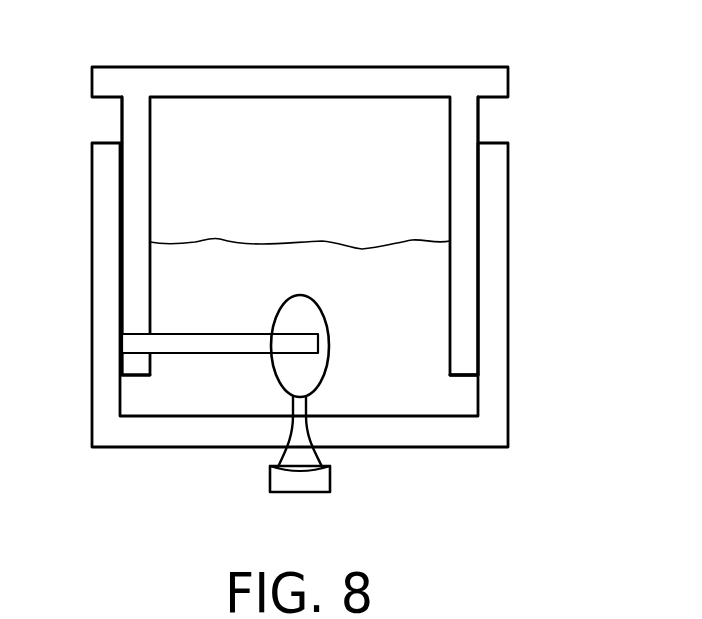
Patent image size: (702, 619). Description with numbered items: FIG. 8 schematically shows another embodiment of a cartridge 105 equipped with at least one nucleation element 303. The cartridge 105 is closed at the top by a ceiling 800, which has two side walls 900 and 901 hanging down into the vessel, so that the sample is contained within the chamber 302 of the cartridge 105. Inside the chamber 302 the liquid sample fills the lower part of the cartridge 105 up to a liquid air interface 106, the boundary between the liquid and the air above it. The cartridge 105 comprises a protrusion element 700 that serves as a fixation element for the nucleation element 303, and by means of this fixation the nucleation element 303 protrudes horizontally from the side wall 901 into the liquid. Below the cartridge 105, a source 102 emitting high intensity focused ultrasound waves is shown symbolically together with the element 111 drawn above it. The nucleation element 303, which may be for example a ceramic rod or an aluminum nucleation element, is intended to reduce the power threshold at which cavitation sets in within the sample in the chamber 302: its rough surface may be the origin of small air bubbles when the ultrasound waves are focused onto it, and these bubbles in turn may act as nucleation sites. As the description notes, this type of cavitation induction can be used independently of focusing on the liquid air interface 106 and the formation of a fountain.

The ceiling 800 is at (439, 78).
The side wall 900 is at (480, 120).
The side wall 901 is at (120, 119).
The liquid air interface 106 is at (436, 242).
The cartridge 105 is at (508, 345).
The chamber 302 is at (418, 388).
The nucleation element 303 is at (207, 334).
The sensor bulb 111 is at (332, 347).
The source 102 is at (270, 479).
The protrusion element 700 is at (140, 400).